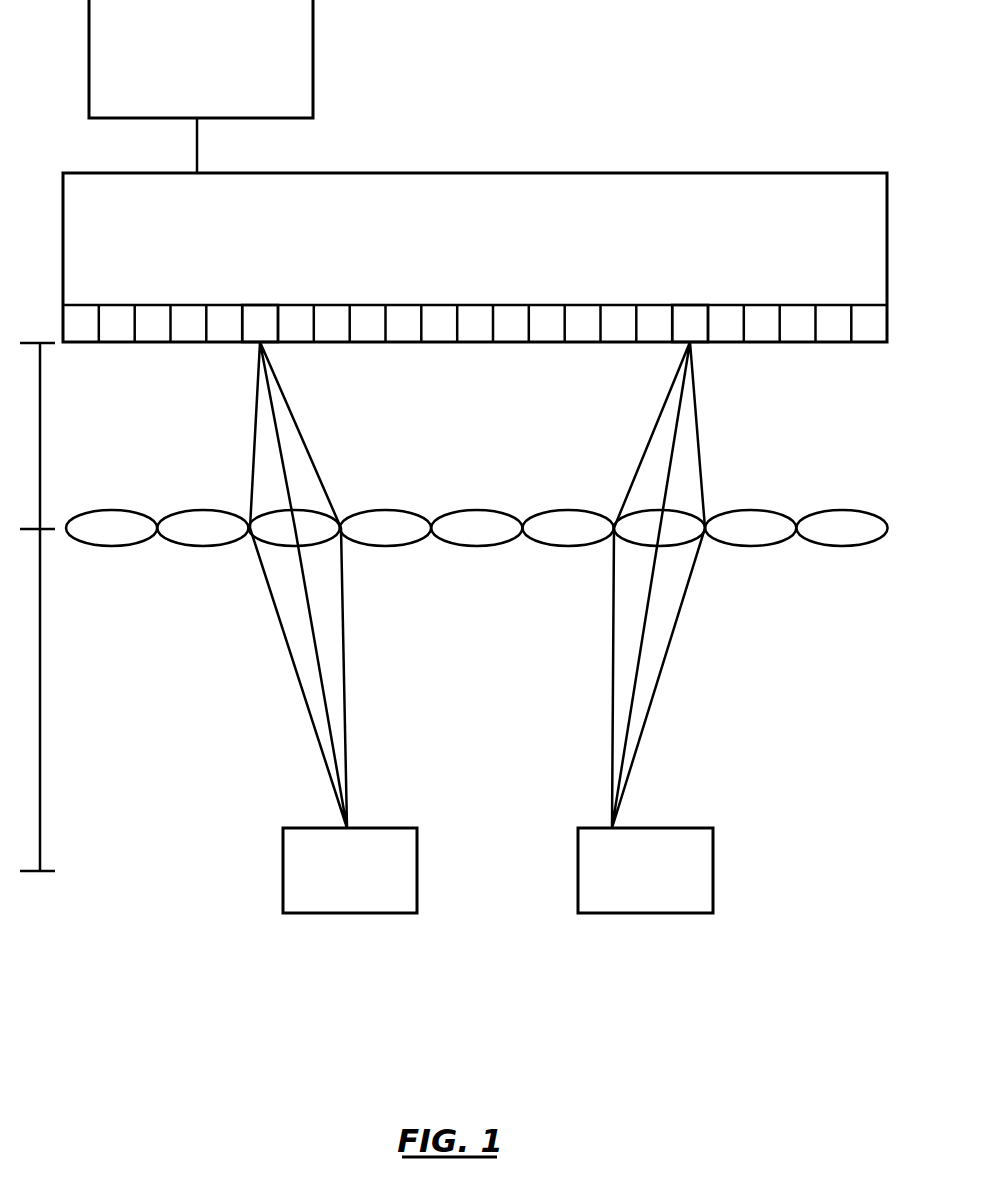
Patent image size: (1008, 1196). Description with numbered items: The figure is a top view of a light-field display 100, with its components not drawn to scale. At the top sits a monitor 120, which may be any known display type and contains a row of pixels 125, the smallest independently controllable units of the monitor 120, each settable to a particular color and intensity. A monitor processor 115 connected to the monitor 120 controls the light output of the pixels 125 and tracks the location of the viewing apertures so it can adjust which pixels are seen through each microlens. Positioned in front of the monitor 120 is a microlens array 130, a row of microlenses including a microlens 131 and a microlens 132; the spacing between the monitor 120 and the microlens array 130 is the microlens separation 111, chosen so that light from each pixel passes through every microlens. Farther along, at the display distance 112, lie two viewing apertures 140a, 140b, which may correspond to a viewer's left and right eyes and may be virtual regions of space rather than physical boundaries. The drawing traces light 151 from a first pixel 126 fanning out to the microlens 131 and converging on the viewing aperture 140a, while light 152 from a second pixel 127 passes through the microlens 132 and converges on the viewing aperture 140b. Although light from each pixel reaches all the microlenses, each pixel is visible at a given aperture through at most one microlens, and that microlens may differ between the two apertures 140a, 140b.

The light-field display 100 is at (430, 1032).
The monitor processor 115 is at (201, 86).
The monitor 120 is at (475, 257).
The pixels 125 is at (70, 295).
The first pixel 126 is at (263, 303).
The second pixel 127 is at (688, 303).
The microlens separation 111 is at (40, 458).
The display distance 112 is at (40, 691).
The microlens array 130 is at (478, 481).
The microlens 131 is at (343, 517).
The microlens 132 is at (614, 517).
The light 151 is at (292, 415).
The light 152 is at (660, 408).
The viewing aperture 140a is at (350, 870).
The viewing aperture 140b is at (645, 870).